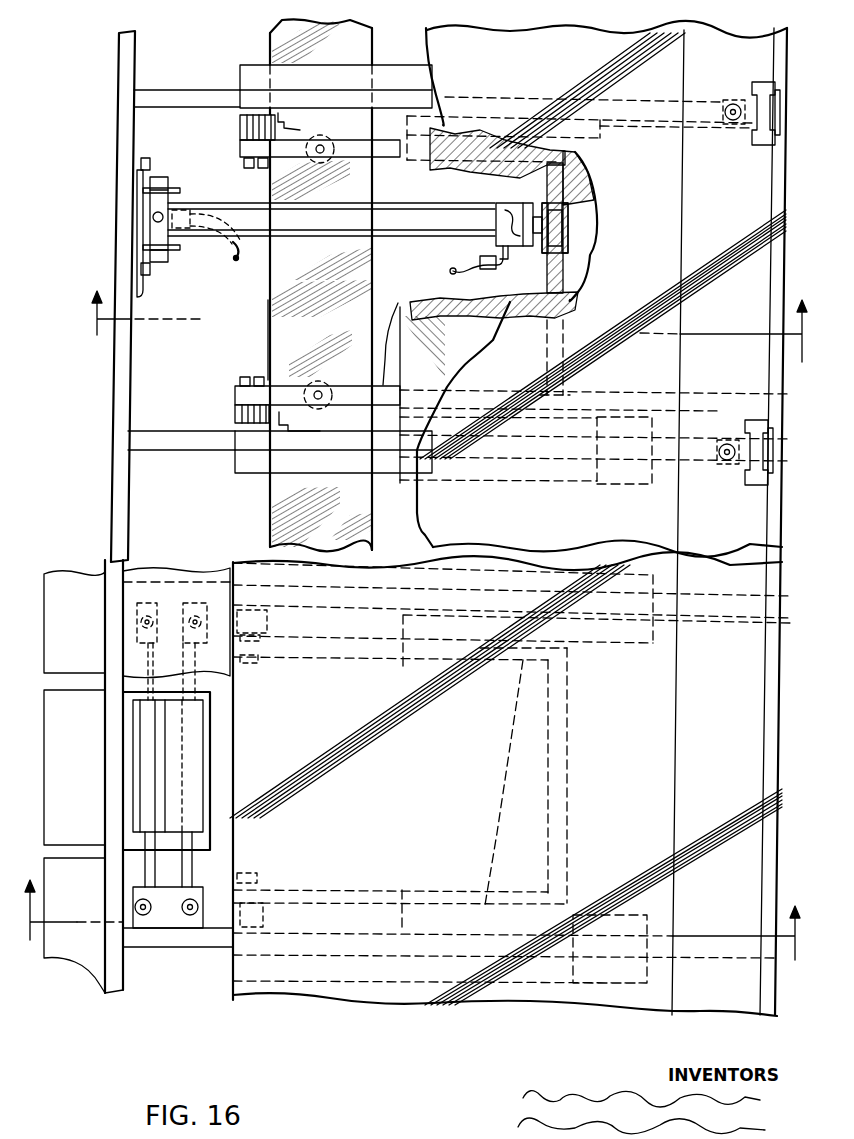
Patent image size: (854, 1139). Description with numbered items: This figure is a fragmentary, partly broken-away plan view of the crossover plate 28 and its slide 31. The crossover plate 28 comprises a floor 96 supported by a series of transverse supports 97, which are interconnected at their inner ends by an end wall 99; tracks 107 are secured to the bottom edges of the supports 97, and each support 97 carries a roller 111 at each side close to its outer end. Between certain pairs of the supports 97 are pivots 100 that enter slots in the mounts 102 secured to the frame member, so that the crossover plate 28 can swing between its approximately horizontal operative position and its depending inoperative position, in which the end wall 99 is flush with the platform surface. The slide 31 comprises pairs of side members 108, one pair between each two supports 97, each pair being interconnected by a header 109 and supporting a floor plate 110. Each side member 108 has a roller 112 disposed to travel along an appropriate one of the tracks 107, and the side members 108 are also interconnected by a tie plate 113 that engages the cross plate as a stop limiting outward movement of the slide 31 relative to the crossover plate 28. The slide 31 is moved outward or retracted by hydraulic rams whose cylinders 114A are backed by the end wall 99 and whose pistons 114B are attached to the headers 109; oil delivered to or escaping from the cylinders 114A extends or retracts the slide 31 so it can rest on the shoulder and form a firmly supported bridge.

The crossover plate 28 is at (433, 1004).
The slide 31 is at (464, 322).
The floor 96 is at (440, 48).
The transverse supports 97 is at (173, 442).
The end wall 99 is at (110, 470).
The pivots 100 is at (180, 862).
The mounts 102 is at (198, 760).
The tracks 107 is at (240, 80).
The side members 108 is at (388, 160).
The header 109 is at (573, 277).
The floor plate 110 is at (593, 233).
The roller 111 is at (790, 103).
The roller 112 is at (240, 127).
The tie plate 113 is at (270, 333).
The cylinders 114A is at (258, 230).
The pistons 114B is at (515, 202).